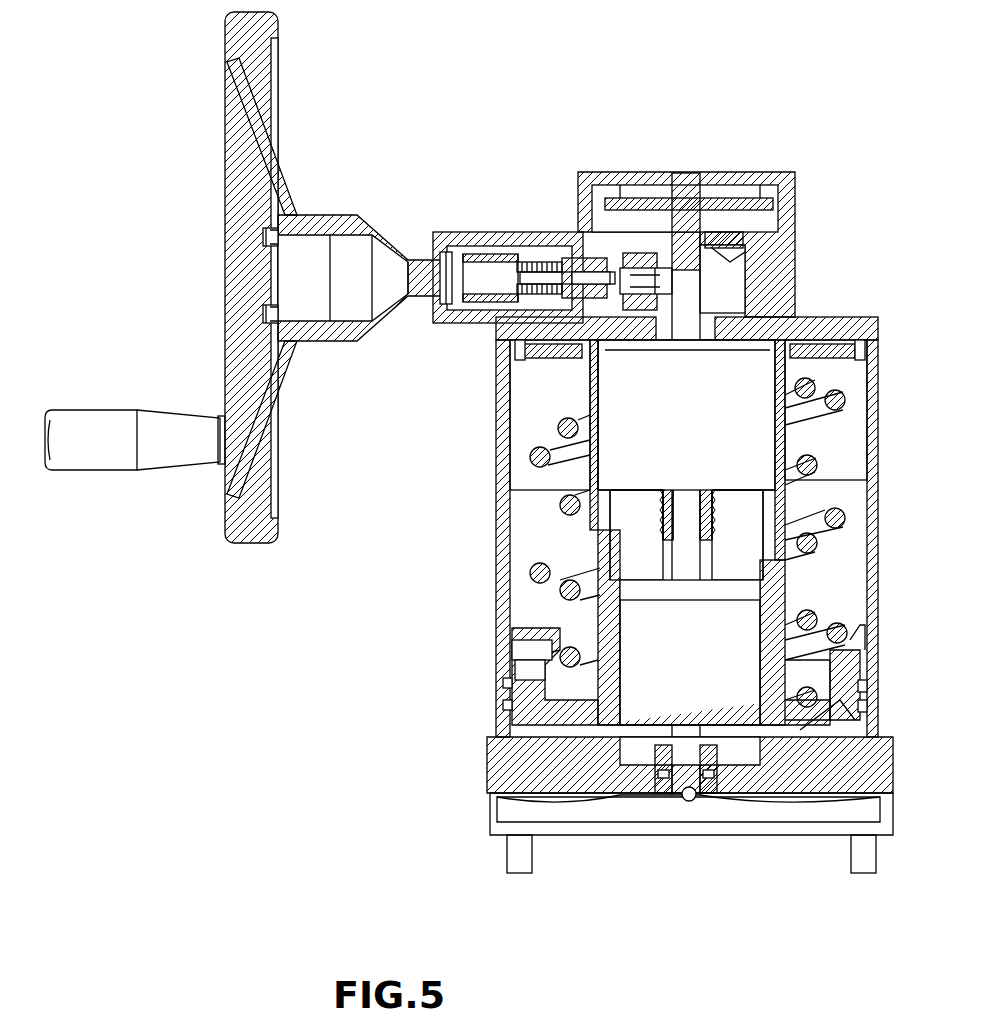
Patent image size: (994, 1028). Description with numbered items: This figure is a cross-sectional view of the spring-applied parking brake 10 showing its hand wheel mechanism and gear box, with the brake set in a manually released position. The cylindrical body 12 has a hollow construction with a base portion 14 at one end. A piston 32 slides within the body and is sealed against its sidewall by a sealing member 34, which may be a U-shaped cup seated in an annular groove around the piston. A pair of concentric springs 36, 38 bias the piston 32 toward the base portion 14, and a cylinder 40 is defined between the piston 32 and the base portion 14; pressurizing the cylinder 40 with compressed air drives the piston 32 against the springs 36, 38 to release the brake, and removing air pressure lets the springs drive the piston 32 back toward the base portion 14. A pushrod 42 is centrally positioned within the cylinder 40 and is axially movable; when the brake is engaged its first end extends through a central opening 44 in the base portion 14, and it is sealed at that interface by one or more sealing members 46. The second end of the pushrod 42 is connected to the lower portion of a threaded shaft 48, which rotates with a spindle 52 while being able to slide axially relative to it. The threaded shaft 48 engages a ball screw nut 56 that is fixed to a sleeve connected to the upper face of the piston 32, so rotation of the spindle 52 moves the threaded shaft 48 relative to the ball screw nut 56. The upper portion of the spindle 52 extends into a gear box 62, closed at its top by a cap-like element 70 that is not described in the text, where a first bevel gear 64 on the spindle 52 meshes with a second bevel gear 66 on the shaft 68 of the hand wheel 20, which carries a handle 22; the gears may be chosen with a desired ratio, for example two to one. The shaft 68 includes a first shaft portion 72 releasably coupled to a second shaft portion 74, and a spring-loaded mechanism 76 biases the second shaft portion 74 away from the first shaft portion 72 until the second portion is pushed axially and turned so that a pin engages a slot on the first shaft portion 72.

The parking brake 10 is at (236, 714).
The cylindrical body 12 is at (872, 462).
The base portion 14 is at (888, 790).
The hand wheel 20 is at (279, 112).
The handle 22 is at (111, 474).
The piston 32 is at (858, 665).
The sealing member 34 is at (868, 678).
The concentric spring 36 is at (810, 455).
The concentric spring 38 is at (845, 525).
The cylinder 40 is at (508, 714).
The pushrod 42 is at (658, 790).
The central opening 44 is at (688, 802).
The sealing member 46 is at (710, 792).
The threaded shaft 48 is at (716, 412).
The spindle 52 is at (690, 422).
The ball screw nut 56 is at (720, 496).
The gear box 62 is at (470, 190).
The first bevel gear 64 is at (722, 248).
The second bevel gear 66 is at (650, 292).
The shaft 68 is at (408, 320).
The cap 70 is at (735, 210).
The first shaft portion 72 is at (482, 283).
The second shaft portion 74 is at (567, 258).
The spring-loaded mechanism 76 is at (540, 265).